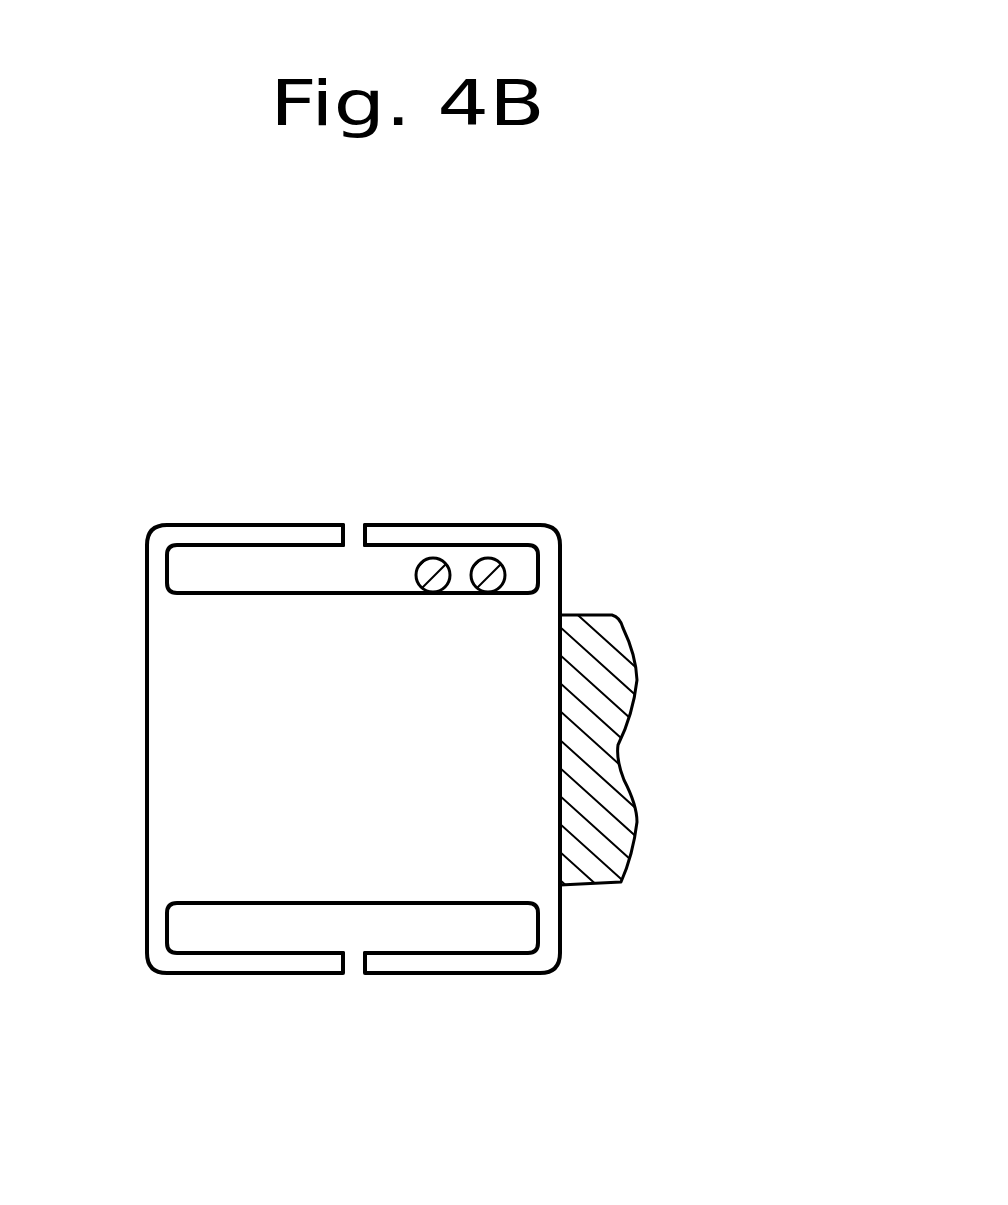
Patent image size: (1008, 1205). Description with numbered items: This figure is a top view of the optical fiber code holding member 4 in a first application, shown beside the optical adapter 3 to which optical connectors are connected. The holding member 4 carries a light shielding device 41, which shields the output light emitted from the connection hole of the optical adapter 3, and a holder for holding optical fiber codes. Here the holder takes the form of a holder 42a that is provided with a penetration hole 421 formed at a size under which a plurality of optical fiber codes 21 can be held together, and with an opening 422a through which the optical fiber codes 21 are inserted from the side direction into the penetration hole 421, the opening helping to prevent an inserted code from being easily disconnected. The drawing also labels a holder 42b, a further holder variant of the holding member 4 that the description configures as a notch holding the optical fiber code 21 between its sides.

The optical fiber code holding member 4 is at (439, 702).
The light shielding device 41 is at (353, 752).
The penetration hole 421 is at (293, 577).
The opening 422a is at (356, 545).
The holder 42a is at (498, 512).
The holder 42b is at (455, 672).
The optical fiber code 21 is at (505, 573).
The optical adapter 3 is at (613, 813).